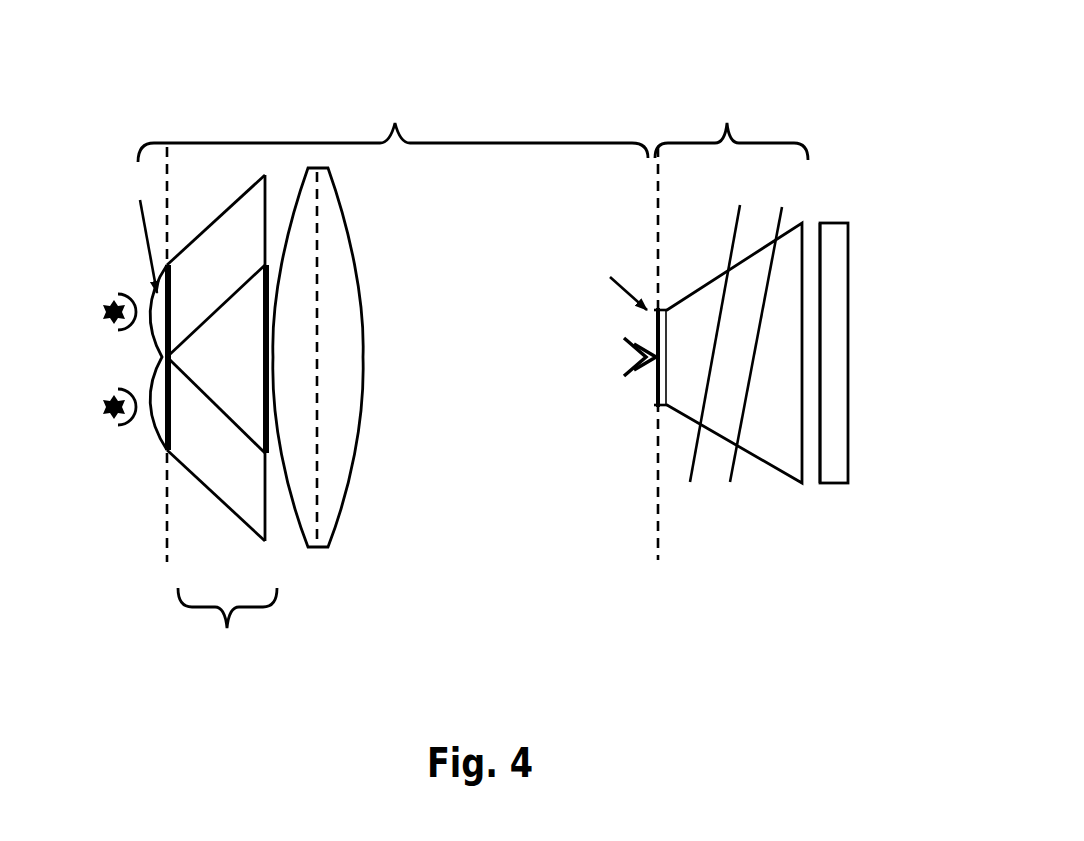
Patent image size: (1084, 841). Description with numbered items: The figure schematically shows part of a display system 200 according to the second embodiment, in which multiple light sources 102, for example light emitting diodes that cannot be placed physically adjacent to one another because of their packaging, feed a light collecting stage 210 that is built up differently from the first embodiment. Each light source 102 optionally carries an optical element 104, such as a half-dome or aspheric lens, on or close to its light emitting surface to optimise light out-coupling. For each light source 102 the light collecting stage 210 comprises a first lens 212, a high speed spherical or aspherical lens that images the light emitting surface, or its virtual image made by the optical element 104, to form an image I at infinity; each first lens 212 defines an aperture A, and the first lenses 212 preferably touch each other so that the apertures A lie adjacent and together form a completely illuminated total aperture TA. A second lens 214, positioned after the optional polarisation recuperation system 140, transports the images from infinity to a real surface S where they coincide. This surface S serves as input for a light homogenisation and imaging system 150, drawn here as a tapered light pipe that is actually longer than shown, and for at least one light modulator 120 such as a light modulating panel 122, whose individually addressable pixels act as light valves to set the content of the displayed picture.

The display system 200 is at (868, 118).
The light collecting stage 210 is at (393, 130).
The light homogenisation and imaging system 150 is at (731, 128).
The polarisation recuperation system 140 is at (222, 419).
The first lens 212 is at (157, 437).
The second lens 214 is at (337, 510).
The optical element 104 is at (115, 293).
The light source 102 is at (117, 329).
The light modulator 120 is at (865, 510).
The light modulating panel 122 is at (833, 233).